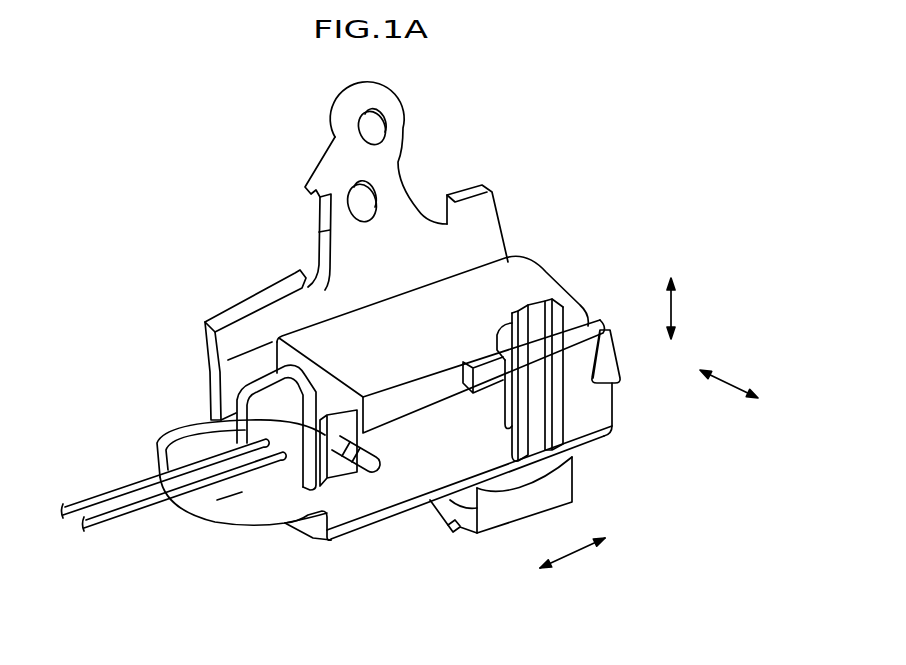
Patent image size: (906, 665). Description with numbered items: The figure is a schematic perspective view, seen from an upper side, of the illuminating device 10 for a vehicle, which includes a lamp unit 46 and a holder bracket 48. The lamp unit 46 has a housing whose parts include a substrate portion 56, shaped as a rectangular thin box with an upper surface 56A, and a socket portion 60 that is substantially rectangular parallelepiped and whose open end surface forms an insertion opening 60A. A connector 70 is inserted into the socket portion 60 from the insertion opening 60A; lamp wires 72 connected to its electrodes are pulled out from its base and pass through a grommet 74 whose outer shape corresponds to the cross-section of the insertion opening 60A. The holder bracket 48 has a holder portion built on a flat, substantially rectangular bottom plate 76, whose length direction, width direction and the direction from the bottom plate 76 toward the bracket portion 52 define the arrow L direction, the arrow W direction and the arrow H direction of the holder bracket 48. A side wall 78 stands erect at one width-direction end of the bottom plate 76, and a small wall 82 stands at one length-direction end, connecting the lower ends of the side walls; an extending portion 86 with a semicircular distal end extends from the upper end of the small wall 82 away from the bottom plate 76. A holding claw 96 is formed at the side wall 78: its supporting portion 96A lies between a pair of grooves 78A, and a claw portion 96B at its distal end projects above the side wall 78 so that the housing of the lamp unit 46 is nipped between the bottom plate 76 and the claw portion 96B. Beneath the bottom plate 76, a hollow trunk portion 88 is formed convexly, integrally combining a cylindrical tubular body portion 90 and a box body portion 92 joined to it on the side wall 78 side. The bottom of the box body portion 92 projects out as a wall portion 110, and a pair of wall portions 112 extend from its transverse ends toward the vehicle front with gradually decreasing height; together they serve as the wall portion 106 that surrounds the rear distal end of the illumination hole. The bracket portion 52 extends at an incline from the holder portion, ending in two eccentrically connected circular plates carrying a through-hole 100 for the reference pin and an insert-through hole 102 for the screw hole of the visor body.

The illuminating device for a vehicle 10 is at (98, 300).
The lamp unit 46 is at (212, 405).
The holder bracket 48 is at (192, 305).
The bracket portion 52 is at (395, 180).
The substrate portion 56 is at (467, 309).
The top surface 56A is at (517, 278).
The socket portion 60 is at (308, 400).
The insertion opening 60A is at (266, 370).
The connector 70 is at (175, 447).
The lamp wires 72 is at (122, 500).
The grommet 74 is at (300, 495).
The bottom plate 76 is at (313, 537).
The side wall 78 is at (613, 401).
The grooves 78A is at (506, 428).
The small wall 82 is at (306, 527).
The extending portion 86 is at (240, 500).
The trunk portion 88 is at (585, 490).
The tubular body portion 90 is at (570, 460).
The box body portion 92 is at (556, 494).
The holding claw 96 is at (451, 342).
The supporting portion 96A is at (517, 367).
The claw portion 96B is at (498, 325).
The through-hole 100 is at (385, 130).
The insert-through hole 102 is at (358, 210).
The wall portion 106 is at (499, 571).
The wall portion 110 is at (457, 528).
The wall portions 112 is at (432, 508).
The height direction H is at (673, 305).
The width direction W is at (735, 378).
The length direction L is at (585, 556).